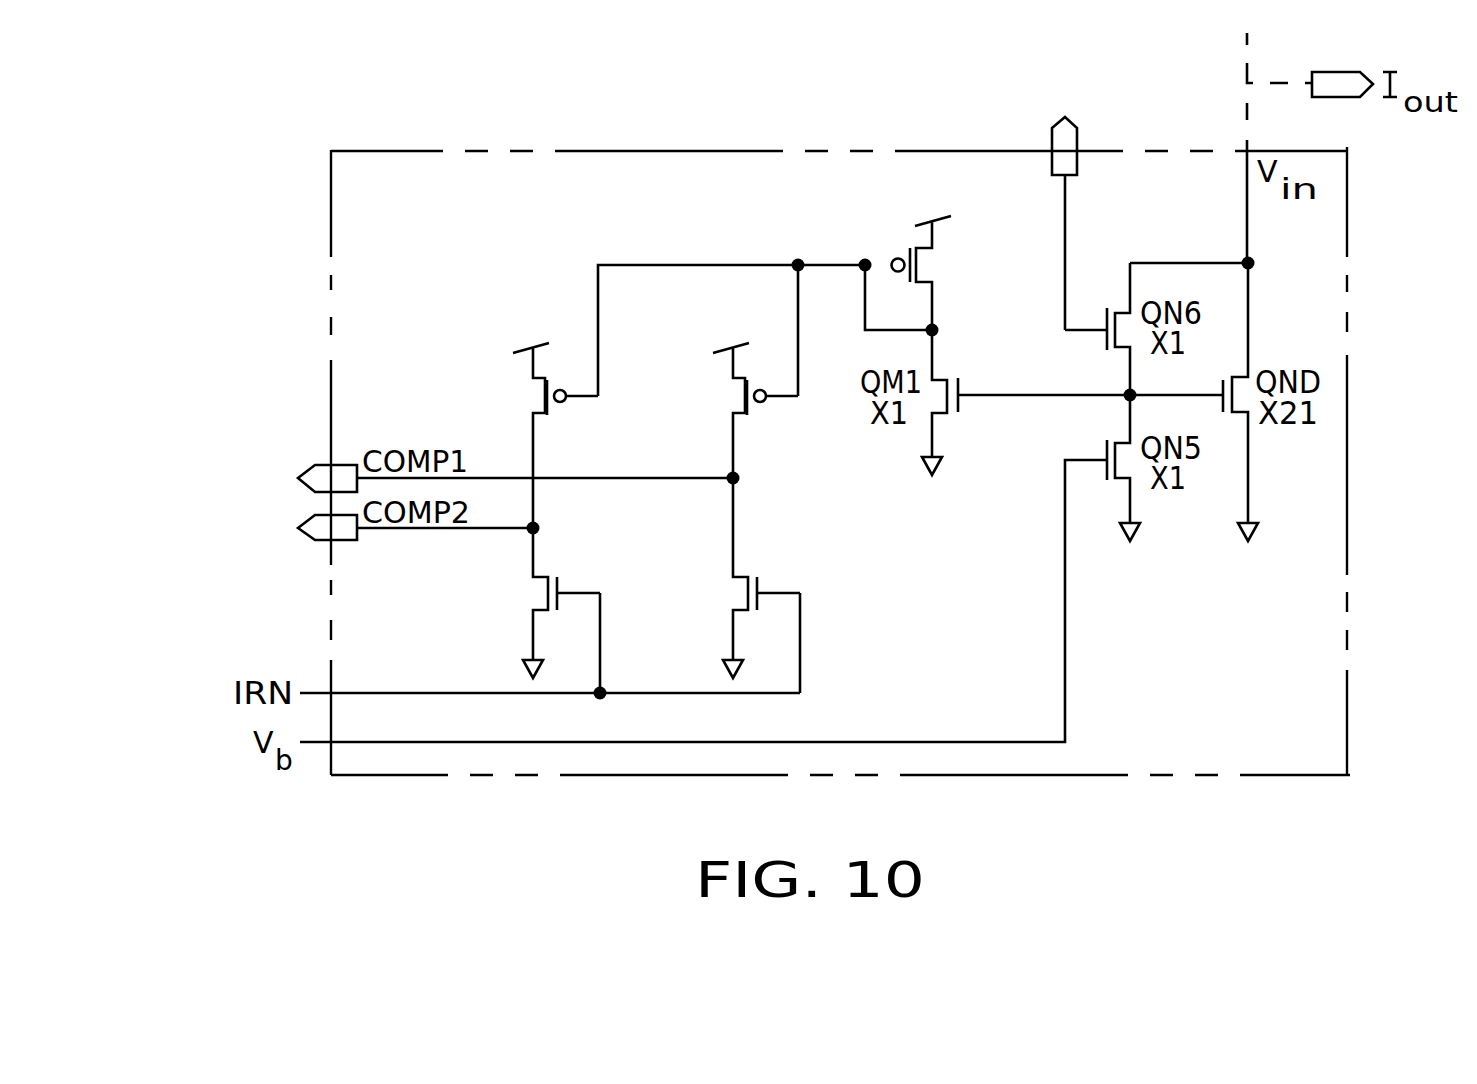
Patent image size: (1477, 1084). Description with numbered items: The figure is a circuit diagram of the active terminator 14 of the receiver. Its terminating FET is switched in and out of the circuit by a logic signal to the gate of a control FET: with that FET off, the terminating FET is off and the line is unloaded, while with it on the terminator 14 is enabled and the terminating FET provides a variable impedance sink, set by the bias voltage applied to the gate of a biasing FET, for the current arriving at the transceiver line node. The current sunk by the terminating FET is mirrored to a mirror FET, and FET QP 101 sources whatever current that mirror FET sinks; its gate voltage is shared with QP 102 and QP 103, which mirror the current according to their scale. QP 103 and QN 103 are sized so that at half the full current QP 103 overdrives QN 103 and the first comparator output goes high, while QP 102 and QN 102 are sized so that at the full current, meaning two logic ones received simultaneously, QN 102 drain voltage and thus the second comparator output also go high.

The active terminator 14 is at (1271, 775).
The transistor QP101 101 is at (969, 247).
The transistors QP102 and QN102 102 is at (707, 487).
The transistors QP103 and QN103 103 is at (507, 487).